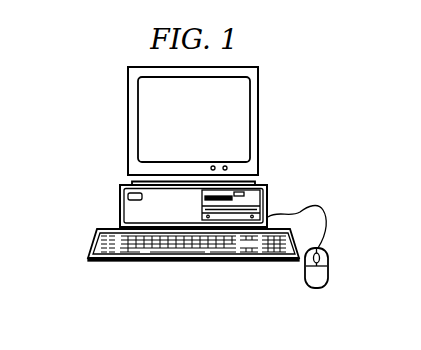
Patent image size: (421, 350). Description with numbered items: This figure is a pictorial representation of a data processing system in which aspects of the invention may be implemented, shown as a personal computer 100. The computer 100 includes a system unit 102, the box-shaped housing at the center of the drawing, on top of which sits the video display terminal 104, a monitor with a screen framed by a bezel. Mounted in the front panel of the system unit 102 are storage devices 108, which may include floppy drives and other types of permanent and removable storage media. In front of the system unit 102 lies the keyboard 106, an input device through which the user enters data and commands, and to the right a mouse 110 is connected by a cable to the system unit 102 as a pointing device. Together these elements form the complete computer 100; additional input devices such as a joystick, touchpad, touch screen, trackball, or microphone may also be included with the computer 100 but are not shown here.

The computer 100 is at (70, 107).
The system unit 102 is at (119, 204).
The video display terminal 104 is at (259, 122).
The keyboard 106 is at (113, 264).
The storage devices 108 is at (271, 200).
The mouse 110 is at (317, 290).